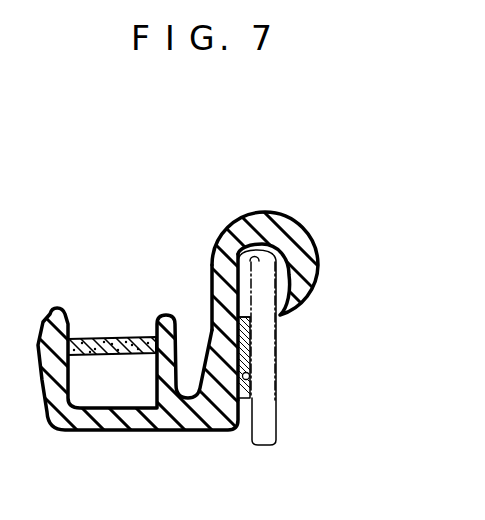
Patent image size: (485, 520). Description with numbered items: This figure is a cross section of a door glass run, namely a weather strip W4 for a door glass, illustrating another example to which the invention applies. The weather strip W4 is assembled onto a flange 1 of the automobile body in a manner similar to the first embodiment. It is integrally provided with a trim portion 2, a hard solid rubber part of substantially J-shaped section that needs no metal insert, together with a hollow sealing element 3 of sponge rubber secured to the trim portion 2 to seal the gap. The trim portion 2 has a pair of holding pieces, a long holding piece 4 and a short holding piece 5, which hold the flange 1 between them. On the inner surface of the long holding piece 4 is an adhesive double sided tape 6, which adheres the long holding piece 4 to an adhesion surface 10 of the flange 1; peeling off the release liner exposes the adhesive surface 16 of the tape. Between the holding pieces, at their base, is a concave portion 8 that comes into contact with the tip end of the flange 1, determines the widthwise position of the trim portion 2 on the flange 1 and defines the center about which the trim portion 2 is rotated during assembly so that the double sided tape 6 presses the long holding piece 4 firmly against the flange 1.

The flange 1 is at (277, 415).
The trim portion 2 is at (216, 430).
The hollow sealing element 3 is at (95, 337).
The long holding piece 4 is at (227, 304).
The short holding piece 5 is at (300, 286).
The adhesive double sided tape 6 is at (252, 360).
The concave portion 8 is at (251, 239).
The adhesion surface 10 is at (252, 386).
The adhesive surface 16 is at (252, 333).
The weather strip for a door glass W4 is at (312, 233).